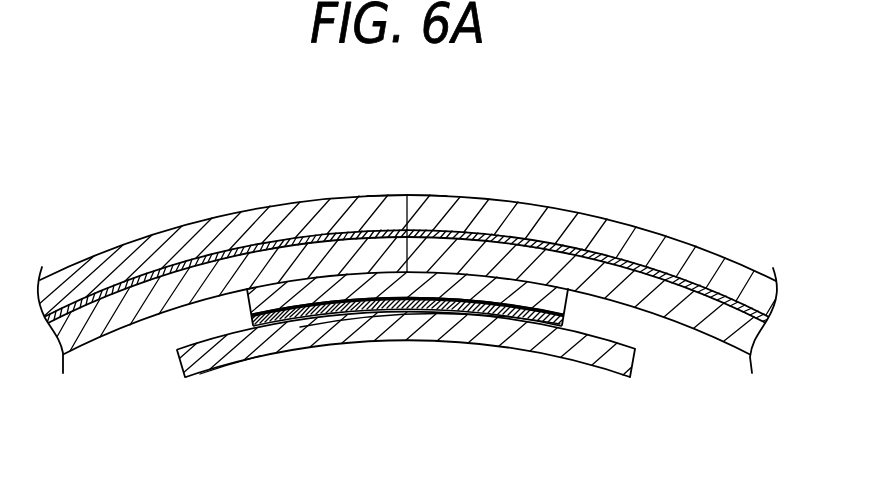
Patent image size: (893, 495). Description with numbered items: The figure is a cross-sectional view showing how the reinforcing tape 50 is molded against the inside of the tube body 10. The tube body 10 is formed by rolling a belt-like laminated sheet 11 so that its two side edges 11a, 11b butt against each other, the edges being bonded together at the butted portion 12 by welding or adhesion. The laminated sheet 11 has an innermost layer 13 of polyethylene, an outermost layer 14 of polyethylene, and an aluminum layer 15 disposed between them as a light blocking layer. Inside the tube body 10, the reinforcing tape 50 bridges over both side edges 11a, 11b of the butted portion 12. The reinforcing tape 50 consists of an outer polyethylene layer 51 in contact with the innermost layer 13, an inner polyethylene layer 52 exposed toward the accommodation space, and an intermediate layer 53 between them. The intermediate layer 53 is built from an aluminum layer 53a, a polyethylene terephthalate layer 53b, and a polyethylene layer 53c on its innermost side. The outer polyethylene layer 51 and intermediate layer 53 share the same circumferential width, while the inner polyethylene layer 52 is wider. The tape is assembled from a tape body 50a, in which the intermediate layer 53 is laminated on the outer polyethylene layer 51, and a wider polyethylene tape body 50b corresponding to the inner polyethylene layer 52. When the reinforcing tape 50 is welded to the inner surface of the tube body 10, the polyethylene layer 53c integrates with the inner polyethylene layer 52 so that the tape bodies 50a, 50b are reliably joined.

The tube body 10 is at (731, 261).
The laminated sheet 11 is at (658, 234).
The side edge 11a is at (415, 218).
The side edge 11b is at (399, 206).
The butted portion 12 is at (407, 193).
The innermost layer 13 is at (118, 318).
The outermost layer 14 is at (188, 233).
The aluminum layer 15 is at (124, 283).
The reinforcing tape 50 is at (308, 346).
The tape body 50a is at (565, 320).
The tape body 50b is at (232, 360).
The outer polyethylene layer 51 is at (540, 292).
The inner polyethylene layer 52 is at (599, 357).
The intermediate layer 53 is at (370, 313).
The aluminum layer 53a is at (498, 302).
The polyethylene terephthalate layer 53b is at (438, 309).
The polyethylene layer 53c is at (488, 314).